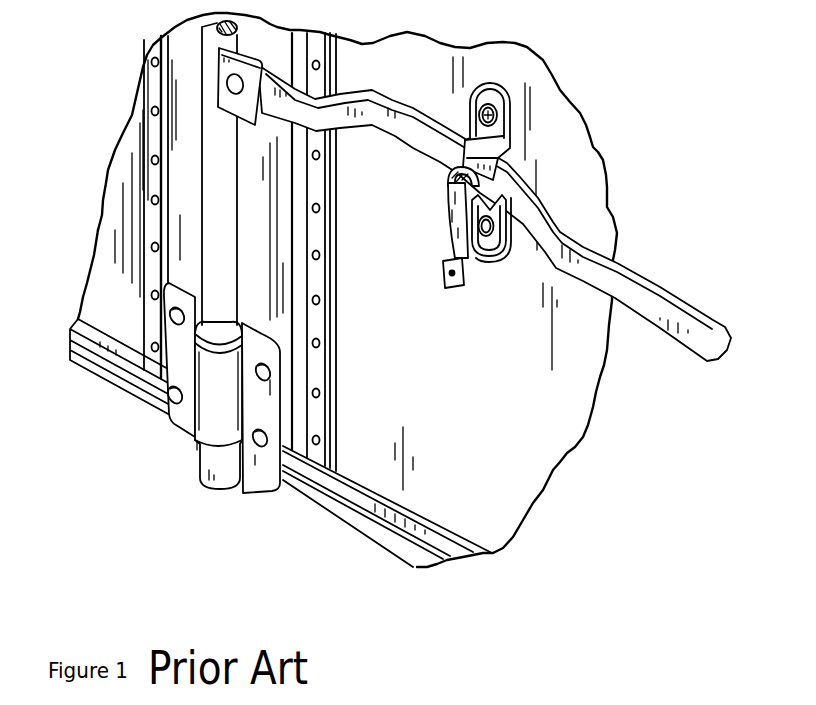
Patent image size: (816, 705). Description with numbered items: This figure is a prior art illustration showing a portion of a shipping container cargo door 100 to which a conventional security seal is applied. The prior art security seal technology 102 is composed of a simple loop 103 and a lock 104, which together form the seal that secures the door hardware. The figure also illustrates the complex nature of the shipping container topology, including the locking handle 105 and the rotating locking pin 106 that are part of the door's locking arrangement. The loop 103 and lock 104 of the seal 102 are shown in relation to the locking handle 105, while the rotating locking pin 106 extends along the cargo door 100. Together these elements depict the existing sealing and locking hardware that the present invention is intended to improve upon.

The shipping container cargo door 100 is at (489, 451).
The security seal technology 102 is at (433, 229).
The loop 103 is at (432, 191).
The lock 104 is at (460, 287).
The locking handle 105 is at (552, 210).
The rotating locking pin 106 is at (187, 90).